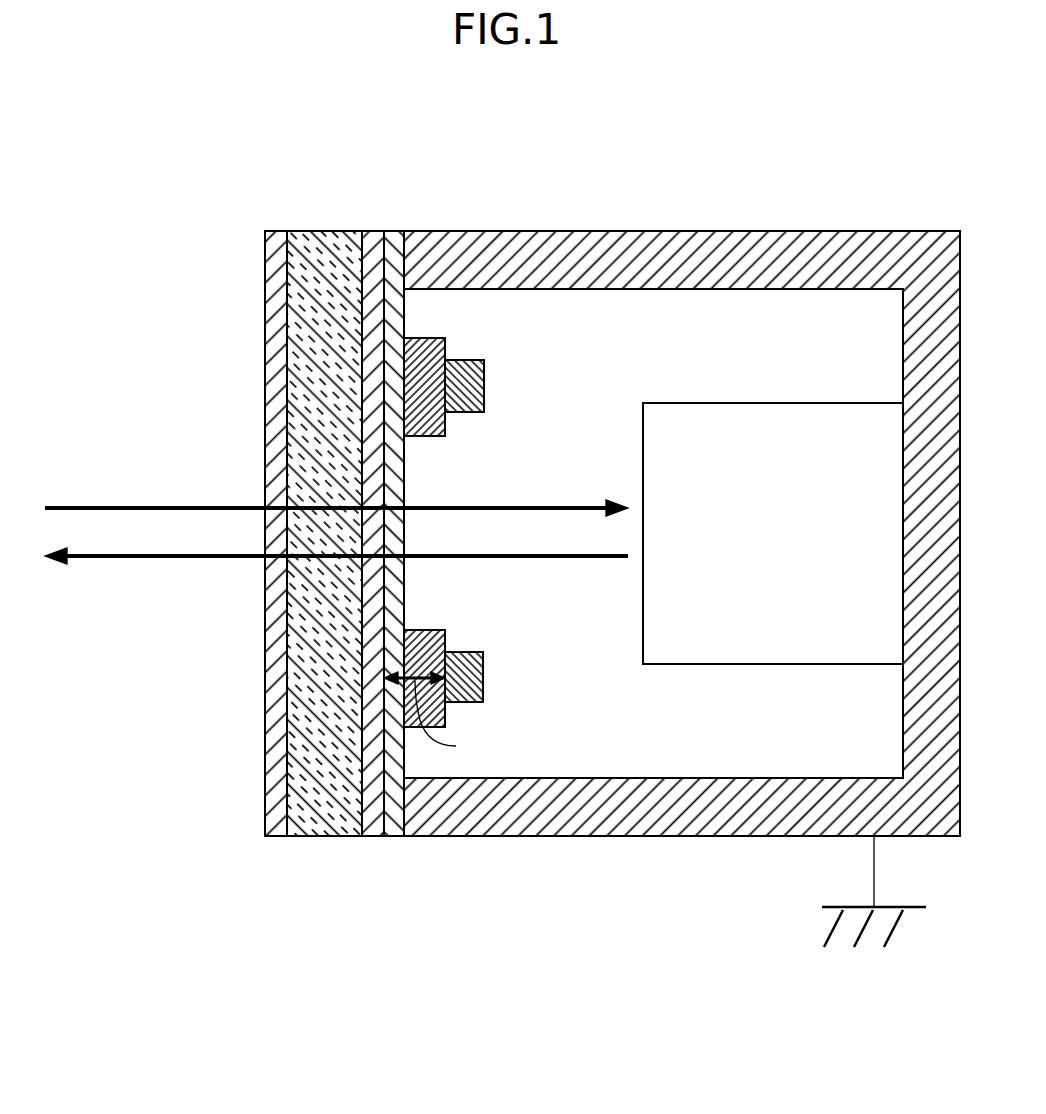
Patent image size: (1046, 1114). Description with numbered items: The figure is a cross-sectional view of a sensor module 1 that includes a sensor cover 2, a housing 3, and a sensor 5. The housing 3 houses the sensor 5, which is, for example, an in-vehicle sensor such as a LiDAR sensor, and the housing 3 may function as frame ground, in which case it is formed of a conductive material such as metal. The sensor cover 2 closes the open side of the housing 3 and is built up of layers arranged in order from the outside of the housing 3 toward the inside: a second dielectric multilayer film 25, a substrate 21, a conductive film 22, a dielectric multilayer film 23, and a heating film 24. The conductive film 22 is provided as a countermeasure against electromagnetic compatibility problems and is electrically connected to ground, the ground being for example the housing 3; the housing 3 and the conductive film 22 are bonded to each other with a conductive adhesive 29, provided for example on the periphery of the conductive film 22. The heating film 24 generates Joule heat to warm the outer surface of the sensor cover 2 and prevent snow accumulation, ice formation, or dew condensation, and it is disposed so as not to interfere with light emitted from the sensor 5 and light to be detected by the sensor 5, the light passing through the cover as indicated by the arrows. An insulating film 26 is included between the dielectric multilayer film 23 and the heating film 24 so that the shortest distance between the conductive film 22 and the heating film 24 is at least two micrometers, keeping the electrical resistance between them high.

The sensor module 1 is at (171, 163).
The sensor cover 2 is at (266, 300).
The housing 3 is at (656, 250).
The sensor 5 is at (792, 549).
The substrate 21 is at (323, 248).
The conductive film 22 is at (372, 250).
The dielectric multilayer film 23 is at (397, 315).
The heating film 24 is at (465, 375).
The second dielectric multilayer film 25 is at (276, 360).
The insulating film 26 is at (417, 426).
The conductive adhesive 29 is at (393, 818).